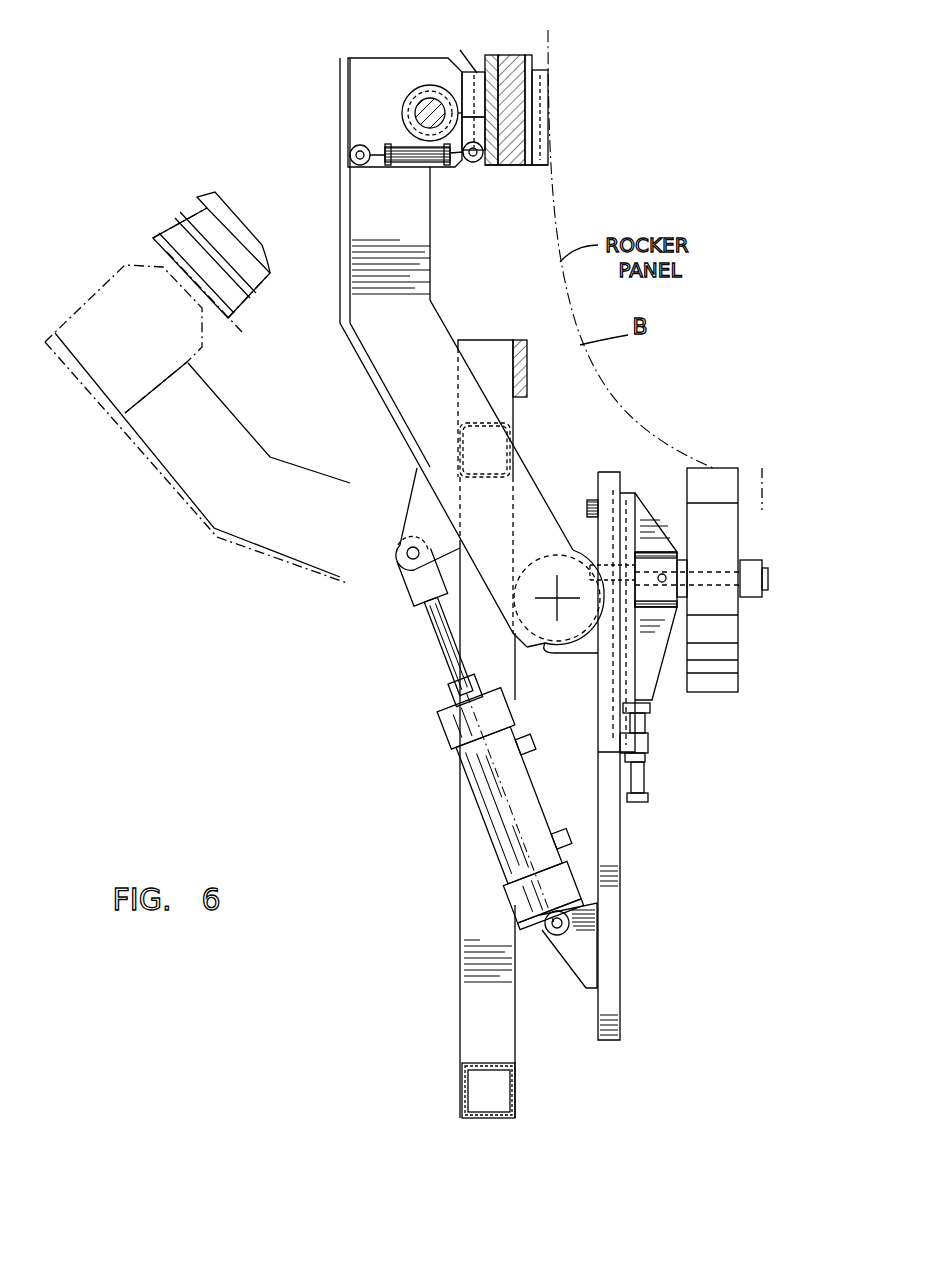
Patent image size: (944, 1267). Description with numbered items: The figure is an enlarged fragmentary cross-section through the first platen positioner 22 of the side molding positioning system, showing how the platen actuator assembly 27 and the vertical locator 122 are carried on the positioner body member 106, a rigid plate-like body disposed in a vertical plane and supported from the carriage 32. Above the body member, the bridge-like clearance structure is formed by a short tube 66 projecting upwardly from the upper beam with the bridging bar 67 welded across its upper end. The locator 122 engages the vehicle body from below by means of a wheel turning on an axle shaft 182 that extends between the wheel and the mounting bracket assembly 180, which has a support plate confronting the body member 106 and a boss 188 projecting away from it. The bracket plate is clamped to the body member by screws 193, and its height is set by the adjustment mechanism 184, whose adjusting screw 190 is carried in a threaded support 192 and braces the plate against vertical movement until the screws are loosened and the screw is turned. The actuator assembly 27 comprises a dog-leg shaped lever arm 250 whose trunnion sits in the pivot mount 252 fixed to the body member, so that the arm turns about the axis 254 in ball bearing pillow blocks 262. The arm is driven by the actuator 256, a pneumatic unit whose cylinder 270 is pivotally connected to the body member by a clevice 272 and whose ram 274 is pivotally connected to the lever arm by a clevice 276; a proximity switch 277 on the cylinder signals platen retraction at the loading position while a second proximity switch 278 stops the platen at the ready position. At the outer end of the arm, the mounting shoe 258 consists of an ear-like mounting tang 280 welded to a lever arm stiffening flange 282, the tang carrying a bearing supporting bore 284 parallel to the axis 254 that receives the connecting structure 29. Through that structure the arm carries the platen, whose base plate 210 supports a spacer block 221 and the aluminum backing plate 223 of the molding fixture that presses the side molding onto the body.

The first platen positioner 22 is at (618, 942).
The platen actuator assembly 27 is at (405, 722).
The connecting structure 29 is at (460, 50).
The carriage 32 is at (462, 970).
The short tubes 66 is at (478, 340).
The bridging bar 67 is at (522, 376).
The body member 106 is at (610, 862).
The vertical locator 122 is at (615, 462).
The mounting bracket assembly 180 is at (650, 498).
The axle shaft 182 is at (707, 585).
The adjustment mechanism 184 is at (648, 725).
The boss 188 is at (678, 562).
The adjusting screw 190 is at (645, 770).
The threaded support 192 is at (637, 743).
The screws 193 is at (586, 508).
The platen base plate 210 is at (493, 167).
The spacer block 221 is at (542, 140).
The backing plate 223 is at (527, 108).
The lever arm 250 is at (340, 232).
The pivot mount 252 is at (453, 657).
The axis 254 is at (557, 598).
The actuator 256 is at (483, 825).
The mounting shoe 258 is at (408, 56).
The ball bearing pillow blocks 262 is at (585, 645).
The cylinder 270 is at (500, 860).
The clevice 272 is at (582, 958).
The ram 274 is at (443, 627).
The clevice 276 is at (414, 500).
The proximity switch 277 is at (570, 828).
The proximity switch 278 is at (537, 748).
The mounting tang 280 is at (358, 83).
The lever arm stiffening flange 282 is at (340, 118).
The bearing supporting bore 284 is at (505, 56).